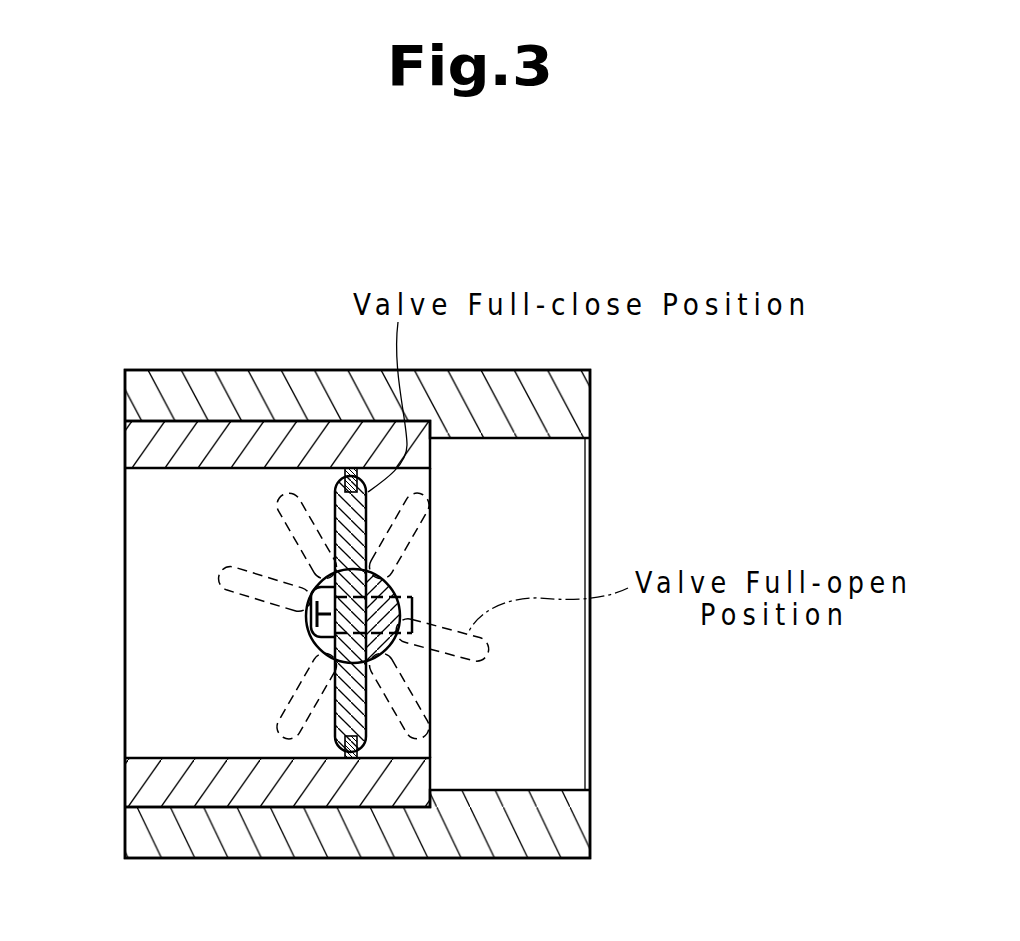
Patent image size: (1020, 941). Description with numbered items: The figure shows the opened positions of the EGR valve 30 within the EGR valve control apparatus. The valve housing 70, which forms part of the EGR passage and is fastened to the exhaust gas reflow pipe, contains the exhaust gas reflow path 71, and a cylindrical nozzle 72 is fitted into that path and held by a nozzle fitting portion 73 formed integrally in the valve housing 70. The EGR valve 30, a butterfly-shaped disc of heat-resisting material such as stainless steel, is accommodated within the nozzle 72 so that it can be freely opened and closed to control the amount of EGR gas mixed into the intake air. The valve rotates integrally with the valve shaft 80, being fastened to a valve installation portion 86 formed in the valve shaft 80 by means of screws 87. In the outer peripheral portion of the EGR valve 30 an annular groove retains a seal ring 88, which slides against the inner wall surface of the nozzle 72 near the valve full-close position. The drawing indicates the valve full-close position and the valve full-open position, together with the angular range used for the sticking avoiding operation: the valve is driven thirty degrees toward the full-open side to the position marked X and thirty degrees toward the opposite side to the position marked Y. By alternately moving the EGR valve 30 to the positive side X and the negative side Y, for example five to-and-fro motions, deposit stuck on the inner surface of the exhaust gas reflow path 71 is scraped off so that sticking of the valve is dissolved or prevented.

The EGR valve 30 is at (367, 736).
The valve housing 70 is at (277, 858).
The exhaust gas reflow path 71 is at (556, 682).
The nozzle 72 is at (197, 807).
The nozzle fitting portion 73 is at (141, 858).
The valve shaft 80 is at (303, 553).
The valve installation portion 86 is at (381, 572).
The screws 87 is at (305, 614).
The seal ring 88 is at (350, 750).
The positive-side opening position X is at (407, 676).
The negative-side opening position Y is at (292, 694).